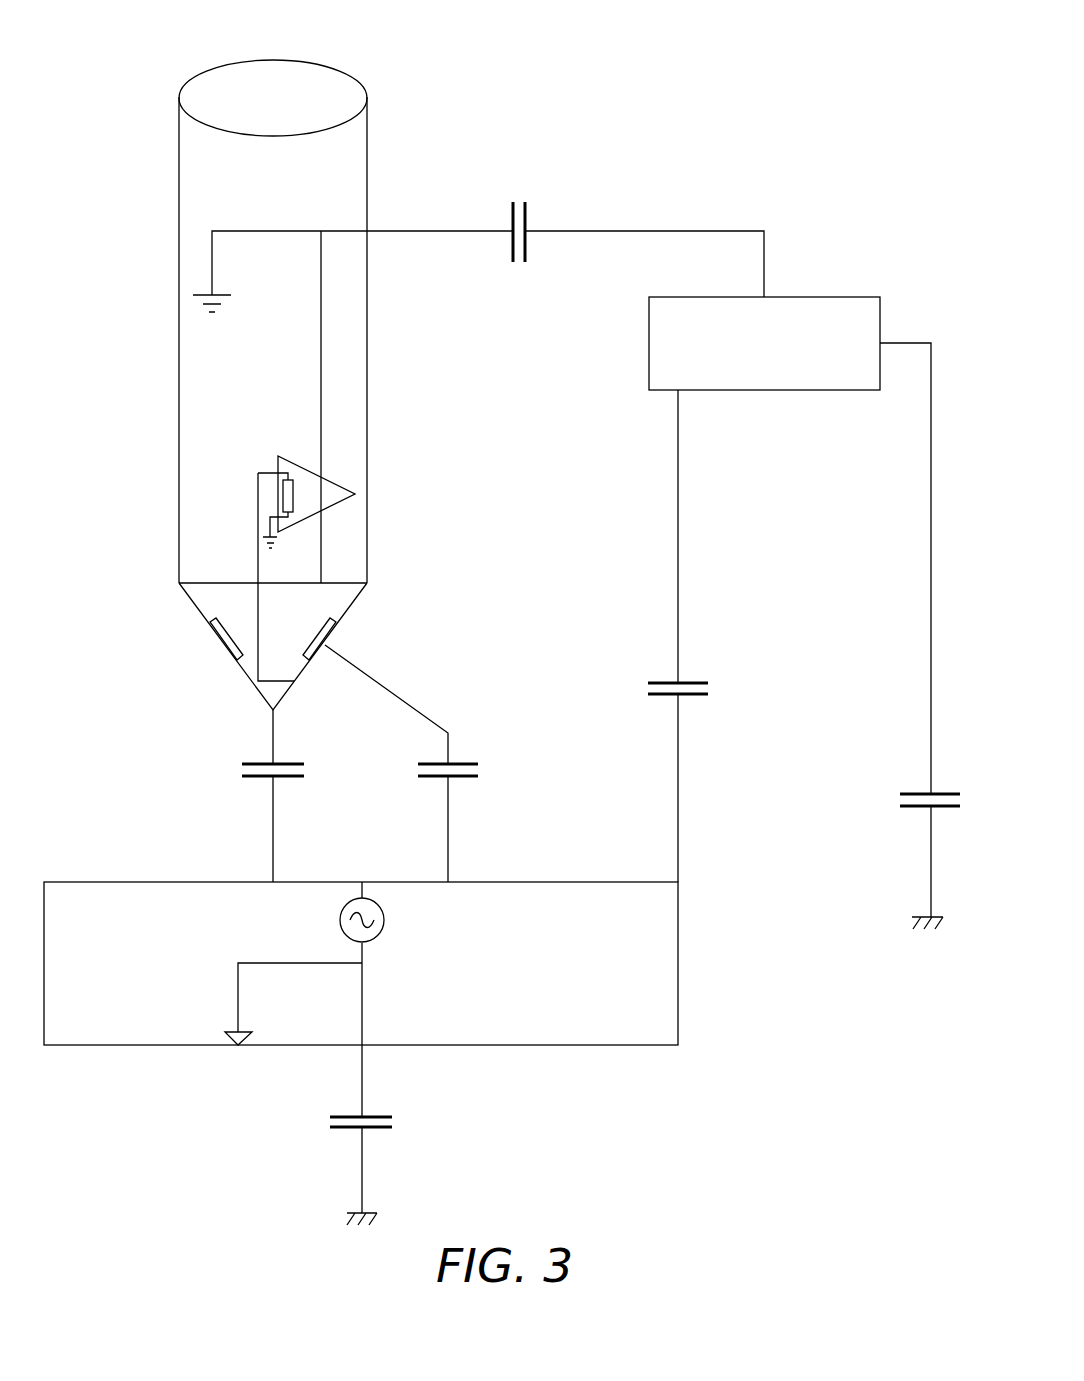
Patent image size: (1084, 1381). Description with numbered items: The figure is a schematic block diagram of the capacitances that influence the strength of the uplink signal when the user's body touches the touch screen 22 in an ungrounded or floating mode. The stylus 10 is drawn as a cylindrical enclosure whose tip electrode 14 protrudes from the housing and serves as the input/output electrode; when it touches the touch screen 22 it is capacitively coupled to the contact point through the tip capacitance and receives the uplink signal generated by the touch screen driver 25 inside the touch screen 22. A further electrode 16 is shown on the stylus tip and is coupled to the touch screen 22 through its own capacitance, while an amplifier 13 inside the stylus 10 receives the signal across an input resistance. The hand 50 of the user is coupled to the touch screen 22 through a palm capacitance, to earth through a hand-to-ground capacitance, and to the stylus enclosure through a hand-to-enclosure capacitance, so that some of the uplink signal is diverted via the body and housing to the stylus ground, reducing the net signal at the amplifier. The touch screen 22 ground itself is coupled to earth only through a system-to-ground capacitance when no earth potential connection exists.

The stylus 10 is at (186, 63).
The amplifier 13 is at (355, 494).
The tip electrode 14 is at (262, 697).
The ring electrode 16 is at (312, 657).
The touch screen 22 is at (680, 1033).
The touch screen driver 25 is at (385, 921).
The hand 50 is at (858, 392).